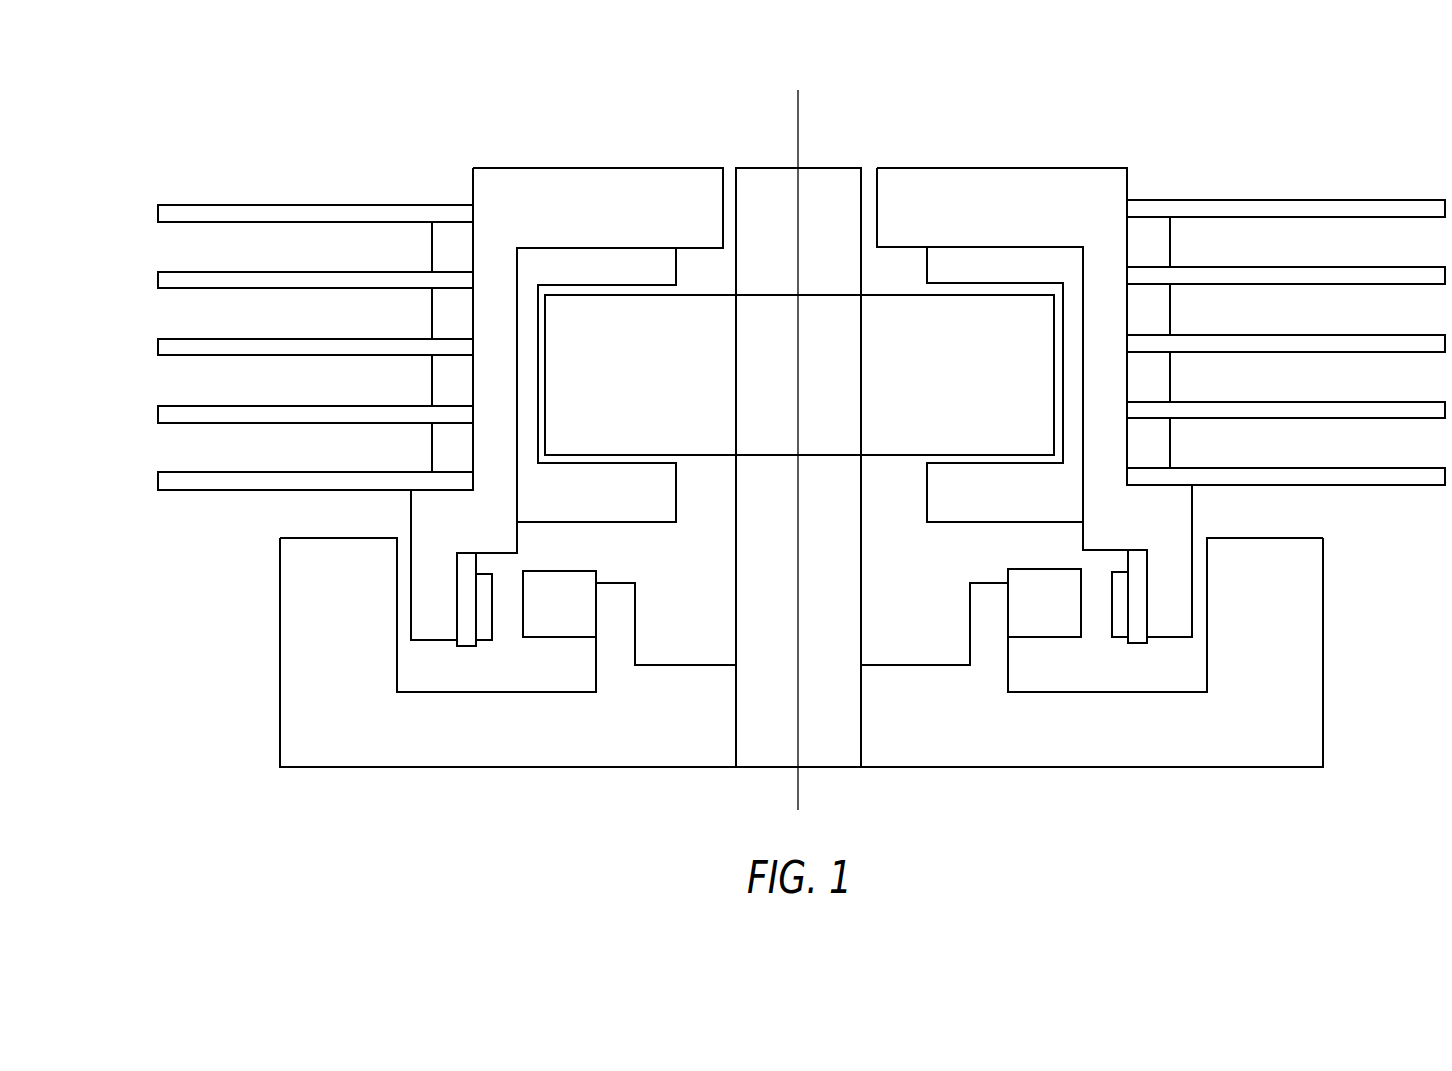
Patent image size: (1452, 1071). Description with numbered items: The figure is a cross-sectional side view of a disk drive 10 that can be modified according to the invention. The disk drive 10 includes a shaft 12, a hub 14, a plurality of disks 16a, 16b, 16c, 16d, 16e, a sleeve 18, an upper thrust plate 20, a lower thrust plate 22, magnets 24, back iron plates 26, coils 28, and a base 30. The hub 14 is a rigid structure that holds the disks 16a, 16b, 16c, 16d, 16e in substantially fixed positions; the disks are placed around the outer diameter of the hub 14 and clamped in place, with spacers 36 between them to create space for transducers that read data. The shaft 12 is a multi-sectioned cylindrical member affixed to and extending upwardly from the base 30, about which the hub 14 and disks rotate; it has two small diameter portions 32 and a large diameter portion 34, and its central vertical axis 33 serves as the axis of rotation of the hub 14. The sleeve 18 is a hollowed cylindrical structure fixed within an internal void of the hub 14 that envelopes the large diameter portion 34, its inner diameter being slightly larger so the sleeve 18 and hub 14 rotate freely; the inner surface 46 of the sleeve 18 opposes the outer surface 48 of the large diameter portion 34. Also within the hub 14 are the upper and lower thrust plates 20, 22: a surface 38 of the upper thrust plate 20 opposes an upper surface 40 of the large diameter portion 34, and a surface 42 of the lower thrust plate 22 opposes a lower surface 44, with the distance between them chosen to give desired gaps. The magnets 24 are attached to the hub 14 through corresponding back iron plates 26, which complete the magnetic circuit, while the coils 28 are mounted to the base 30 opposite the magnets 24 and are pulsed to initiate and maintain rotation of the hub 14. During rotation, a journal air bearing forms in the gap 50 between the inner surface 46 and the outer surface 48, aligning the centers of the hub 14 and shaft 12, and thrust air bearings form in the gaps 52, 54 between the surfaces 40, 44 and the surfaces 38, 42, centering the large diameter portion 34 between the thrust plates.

The disk drive 10 is at (443, 130).
The shaft 12 is at (767, 168).
The hub 14 is at (982, 183).
The disk 16a is at (1276, 200).
The disk 16b is at (1280, 277).
The disk 16c is at (1282, 343).
The disk 16d is at (1300, 410).
The disk 16e is at (1288, 476).
The sleeve 18 is at (1100, 273).
The upper thrust plate 20 is at (1010, 260).
The lower thrust plate 22 is at (947, 512).
The magnet 24 is at (1120, 620).
The back iron plate 26 is at (1133, 633).
The coil 28 is at (1025, 578).
The base 30 is at (700, 721).
The small diameter portion 32 is at (782, 243).
The axis of rotation 33 is at (798, 123).
The large diameter portion 34 is at (685, 370).
The spacer 36 is at (1161, 258).
The surface 38 is at (955, 283).
The upper surface 40 is at (985, 295).
The surface 42 is at (987, 463).
The lower surface 44 is at (963, 455).
The inner surface 46 is at (1063, 348).
The outer surface 48 is at (1054, 393).
The gap 50 is at (1083, 435).
The gap 52 is at (573, 255).
The gap 54 is at (573, 497).